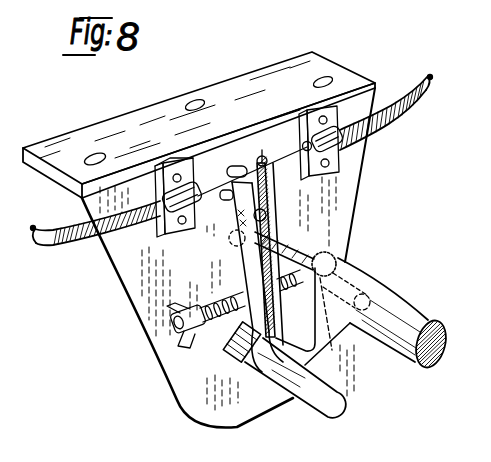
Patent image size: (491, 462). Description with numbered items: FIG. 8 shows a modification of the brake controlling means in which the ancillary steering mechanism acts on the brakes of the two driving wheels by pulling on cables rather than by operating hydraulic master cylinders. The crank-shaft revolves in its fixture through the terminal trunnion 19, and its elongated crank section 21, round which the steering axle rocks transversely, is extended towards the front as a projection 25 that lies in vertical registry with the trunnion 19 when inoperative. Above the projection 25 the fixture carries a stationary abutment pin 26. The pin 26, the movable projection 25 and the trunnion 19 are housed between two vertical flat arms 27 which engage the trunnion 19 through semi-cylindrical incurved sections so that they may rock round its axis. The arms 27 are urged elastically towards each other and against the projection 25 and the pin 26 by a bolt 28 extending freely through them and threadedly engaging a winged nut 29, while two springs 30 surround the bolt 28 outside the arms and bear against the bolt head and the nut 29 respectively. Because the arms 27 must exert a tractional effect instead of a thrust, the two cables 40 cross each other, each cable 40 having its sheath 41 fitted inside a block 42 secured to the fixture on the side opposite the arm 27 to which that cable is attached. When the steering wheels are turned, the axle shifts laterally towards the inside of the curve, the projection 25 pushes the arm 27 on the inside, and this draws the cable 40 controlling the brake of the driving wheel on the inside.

The terminal trunnion 19 is at (289, 385).
The crank section 21 is at (388, 306).
The projection 25 is at (297, 248).
The abutment pin 26 is at (267, 215).
The flat arm 27 is at (250, 237).
The bolt 28 is at (223, 293).
The winged nut 29 is at (198, 338).
The spring 30 is at (221, 324).
The cable 40 is at (286, 152).
The sheath 41 is at (387, 127).
The block 42 is at (193, 167).